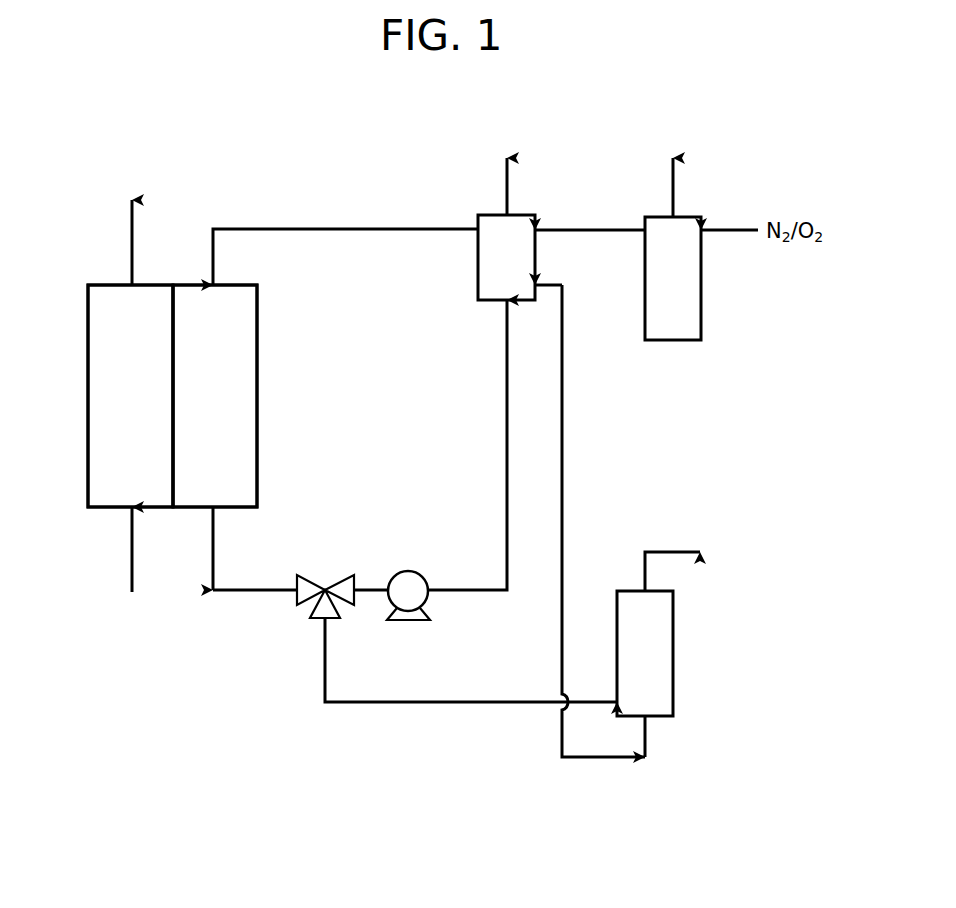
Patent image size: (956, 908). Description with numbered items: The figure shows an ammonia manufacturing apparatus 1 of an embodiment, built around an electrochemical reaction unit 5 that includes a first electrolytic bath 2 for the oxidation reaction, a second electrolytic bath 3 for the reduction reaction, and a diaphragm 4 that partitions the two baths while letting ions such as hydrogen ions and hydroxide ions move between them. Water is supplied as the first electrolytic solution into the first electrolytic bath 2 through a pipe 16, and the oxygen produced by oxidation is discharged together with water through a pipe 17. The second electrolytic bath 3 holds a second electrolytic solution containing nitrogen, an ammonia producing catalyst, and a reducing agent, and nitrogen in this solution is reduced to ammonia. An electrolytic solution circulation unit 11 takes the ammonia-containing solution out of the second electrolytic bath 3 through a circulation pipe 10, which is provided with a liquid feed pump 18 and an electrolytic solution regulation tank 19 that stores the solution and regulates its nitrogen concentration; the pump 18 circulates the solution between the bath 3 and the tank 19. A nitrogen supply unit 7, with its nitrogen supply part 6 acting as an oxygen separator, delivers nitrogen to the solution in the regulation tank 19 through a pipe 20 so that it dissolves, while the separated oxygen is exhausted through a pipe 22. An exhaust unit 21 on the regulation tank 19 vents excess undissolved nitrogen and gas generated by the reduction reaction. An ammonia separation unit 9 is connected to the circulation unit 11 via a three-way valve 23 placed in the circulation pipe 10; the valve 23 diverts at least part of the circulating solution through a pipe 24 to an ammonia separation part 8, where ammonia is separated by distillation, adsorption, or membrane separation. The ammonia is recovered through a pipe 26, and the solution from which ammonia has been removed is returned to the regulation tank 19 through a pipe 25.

The ammonia manufacturing apparatus 1 is at (598, 131).
The first electrolytic bath 2 is at (88, 450).
The second electrolytic bath 3 is at (257, 450).
The diaphragm 4 is at (174, 480).
The electrochemical reaction unit 5 is at (270, 356).
The nitrogen supply part 6 is at (701, 318).
The nitrogen supply unit 7 is at (731, 208).
The ammonia separation part 8 is at (673, 660).
The ammonia separation unit 9 is at (690, 632).
The circulation pipe 10 is at (378, 231).
The electrolytic solution circulation unit 11 is at (310, 216).
The pipe 16 is at (130, 565).
The pipe 17 is at (130, 260).
The liquid feed pump 18 is at (411, 572).
The electrolytic solution regulation tank 19 is at (478, 278).
The pipe 20 is at (585, 230).
The exhaust unit 21 is at (507, 196).
The pipe 22 is at (673, 190).
The three-way valve 23 is at (337, 580).
The pipe 24 is at (403, 702).
The pipe 25 is at (562, 664).
The pipe 26 is at (645, 578).